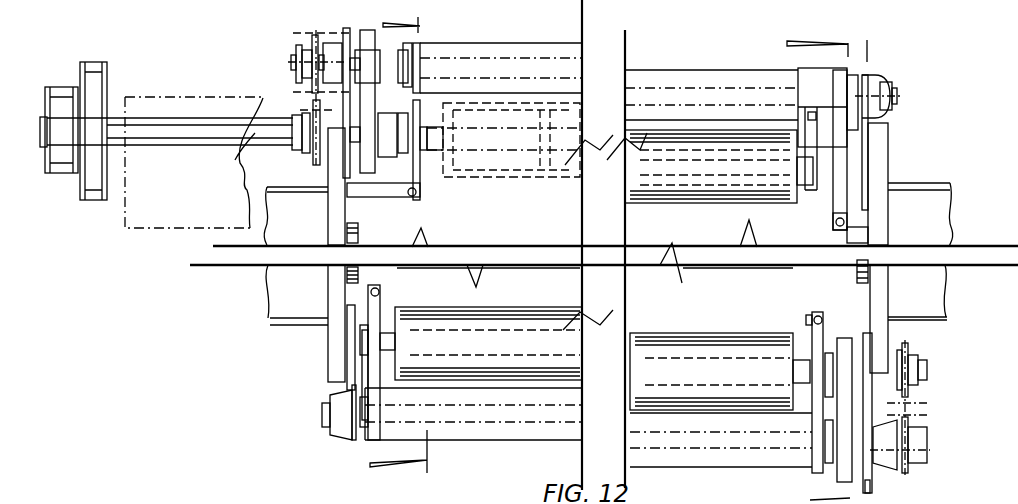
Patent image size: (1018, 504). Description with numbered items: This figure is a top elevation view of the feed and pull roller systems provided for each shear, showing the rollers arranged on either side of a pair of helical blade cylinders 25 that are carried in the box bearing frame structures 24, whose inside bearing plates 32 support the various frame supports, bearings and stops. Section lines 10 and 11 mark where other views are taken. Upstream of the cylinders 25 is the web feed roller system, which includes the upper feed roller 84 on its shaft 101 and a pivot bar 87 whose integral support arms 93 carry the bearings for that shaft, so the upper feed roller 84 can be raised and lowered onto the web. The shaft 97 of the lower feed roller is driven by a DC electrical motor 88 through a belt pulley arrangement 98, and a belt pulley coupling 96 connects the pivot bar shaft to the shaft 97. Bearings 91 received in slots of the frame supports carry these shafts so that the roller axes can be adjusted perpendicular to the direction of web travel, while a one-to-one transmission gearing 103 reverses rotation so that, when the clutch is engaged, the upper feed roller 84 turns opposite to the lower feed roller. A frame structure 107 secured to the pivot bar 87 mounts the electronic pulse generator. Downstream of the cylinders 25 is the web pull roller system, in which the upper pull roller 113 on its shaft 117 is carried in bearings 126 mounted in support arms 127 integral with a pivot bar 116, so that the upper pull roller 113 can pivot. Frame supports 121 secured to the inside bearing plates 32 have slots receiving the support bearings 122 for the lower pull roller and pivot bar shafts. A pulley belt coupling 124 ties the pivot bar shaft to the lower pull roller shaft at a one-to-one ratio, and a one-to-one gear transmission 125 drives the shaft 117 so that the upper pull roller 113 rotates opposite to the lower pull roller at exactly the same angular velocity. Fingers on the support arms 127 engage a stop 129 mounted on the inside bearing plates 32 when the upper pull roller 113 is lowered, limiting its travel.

The section line 10- 10 is at (382, 242).
The section line 11- 11 is at (841, 269).
The box bearing frame structure 24 is at (65, 487).
The helical blade cylinder 25 is at (740, 272).
The inside bearing plate 32 is at (333, 213).
The upper feed roller 84 is at (688, 178).
The pivot bar 87 is at (743, 60).
The DC electrical motor 88 is at (197, 230).
The bearing 91 is at (877, 75).
The support arm 93 is at (417, 170).
The belt pulley coupling 96 is at (307, 100).
The shaft 97 is at (208, 118).
The belt pulley arrangement 98 is at (90, 173).
The shaft 101 is at (763, 178).
The 1:1 transmission gearing 103 is at (373, 43).
The frame structure 107 is at (820, 60).
The upper pull roller 113 is at (547, 363).
The pivot bar 116 is at (520, 443).
The shaft 117 is at (807, 363).
The frame support 121 is at (880, 480).
The support bearing 122 is at (330, 397).
The pulley belt coupling 124 is at (917, 413).
The 1:1 gear transmission 125 is at (845, 403).
The bearing 126 is at (360, 345).
The support arm 127 is at (382, 307).
The stop 129 is at (368, 200).